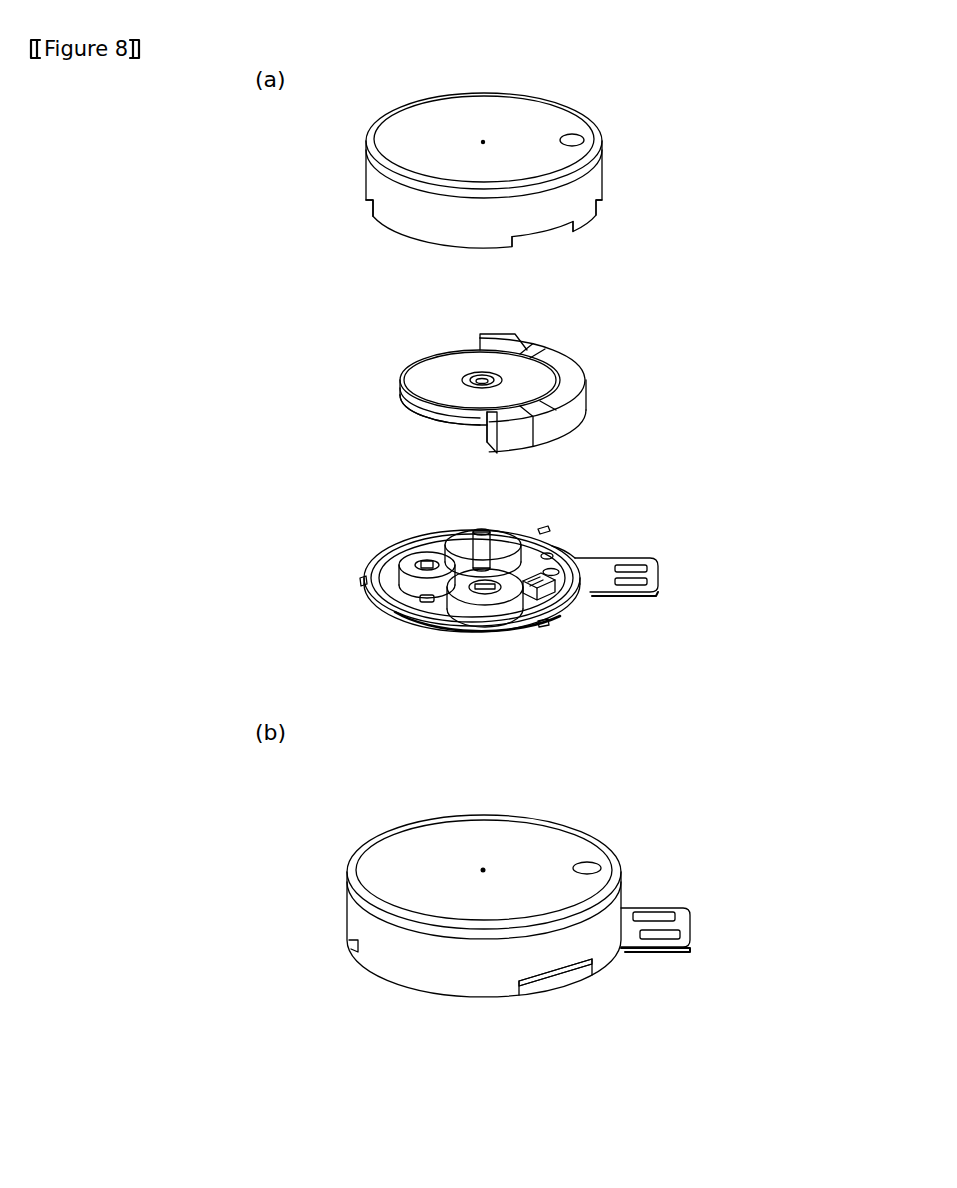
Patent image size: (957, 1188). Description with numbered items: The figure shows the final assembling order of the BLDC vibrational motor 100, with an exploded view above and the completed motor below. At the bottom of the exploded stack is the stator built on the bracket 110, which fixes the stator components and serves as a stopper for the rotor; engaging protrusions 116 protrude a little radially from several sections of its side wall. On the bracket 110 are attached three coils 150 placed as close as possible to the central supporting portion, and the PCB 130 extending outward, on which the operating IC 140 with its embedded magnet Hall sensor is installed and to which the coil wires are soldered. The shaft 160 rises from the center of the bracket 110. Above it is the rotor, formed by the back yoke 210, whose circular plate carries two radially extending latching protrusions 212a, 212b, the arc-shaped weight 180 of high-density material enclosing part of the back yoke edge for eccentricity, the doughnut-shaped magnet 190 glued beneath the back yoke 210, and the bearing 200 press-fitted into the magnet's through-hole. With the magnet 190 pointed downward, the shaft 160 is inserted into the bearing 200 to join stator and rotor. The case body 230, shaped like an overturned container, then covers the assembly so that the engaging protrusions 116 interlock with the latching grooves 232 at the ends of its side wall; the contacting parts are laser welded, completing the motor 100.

The BLDC vibrational motor 100 is at (723, 156).
The bracket 110 is at (408, 629).
The engaging protrusions 116 is at (545, 532).
The PCB 130 is at (592, 582).
The operating IC 140 is at (551, 593).
The coils 150 is at (450, 527).
The shaft 160 is at (486, 552).
The weight 180 is at (577, 396).
The magnet 190 is at (476, 441).
The bearing 200 is at (499, 394).
The back yoke 210 is at (412, 382).
The latching protrusion 212a is at (548, 342).
The latching protrusion 212b is at (536, 426).
The case body 230 is at (588, 111).
The latching grooves 232 is at (370, 205).